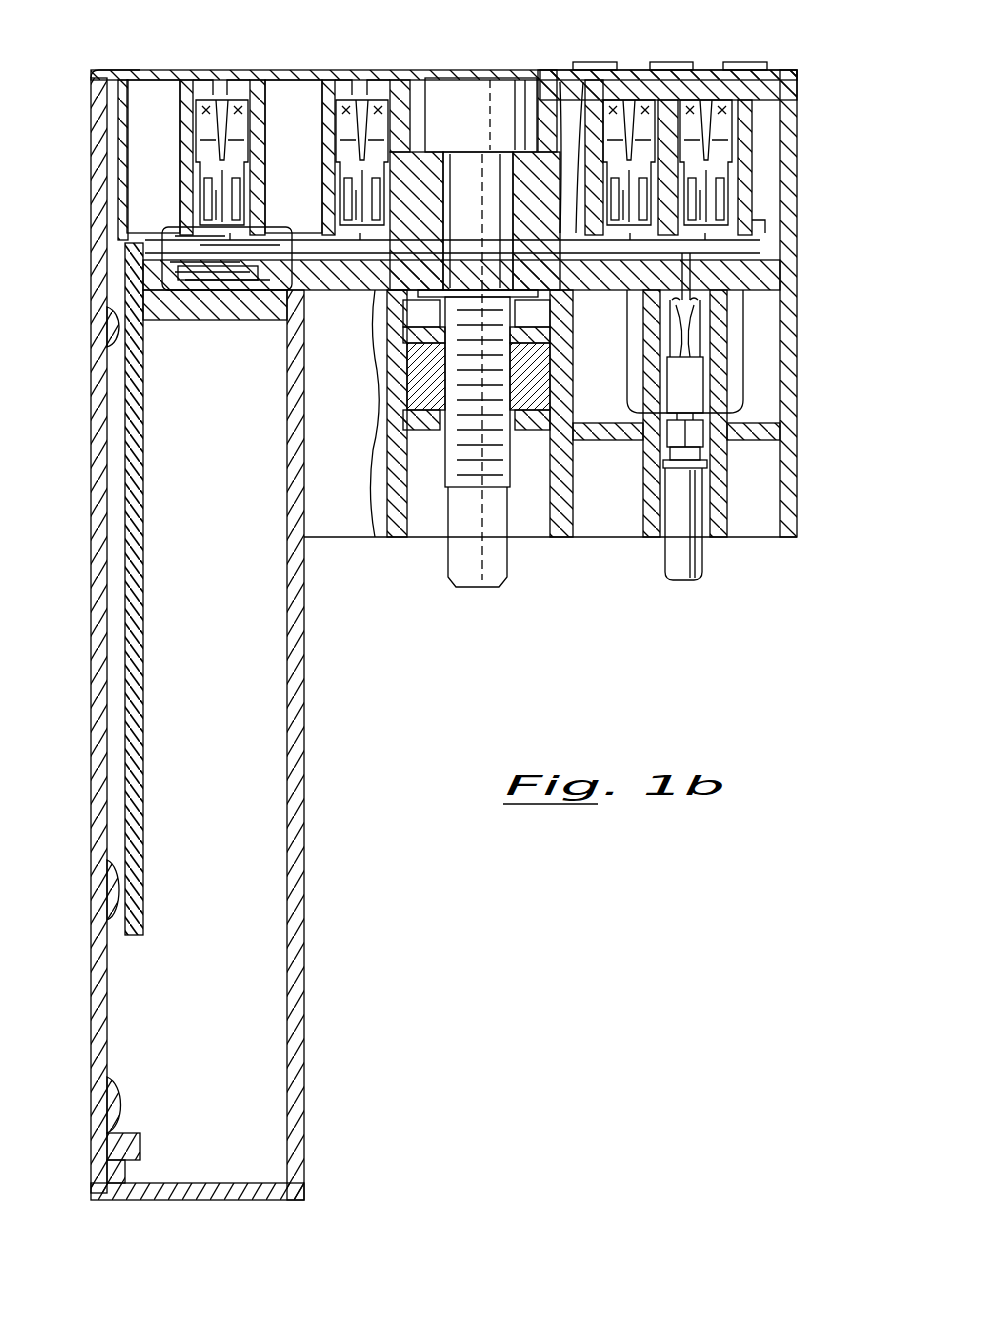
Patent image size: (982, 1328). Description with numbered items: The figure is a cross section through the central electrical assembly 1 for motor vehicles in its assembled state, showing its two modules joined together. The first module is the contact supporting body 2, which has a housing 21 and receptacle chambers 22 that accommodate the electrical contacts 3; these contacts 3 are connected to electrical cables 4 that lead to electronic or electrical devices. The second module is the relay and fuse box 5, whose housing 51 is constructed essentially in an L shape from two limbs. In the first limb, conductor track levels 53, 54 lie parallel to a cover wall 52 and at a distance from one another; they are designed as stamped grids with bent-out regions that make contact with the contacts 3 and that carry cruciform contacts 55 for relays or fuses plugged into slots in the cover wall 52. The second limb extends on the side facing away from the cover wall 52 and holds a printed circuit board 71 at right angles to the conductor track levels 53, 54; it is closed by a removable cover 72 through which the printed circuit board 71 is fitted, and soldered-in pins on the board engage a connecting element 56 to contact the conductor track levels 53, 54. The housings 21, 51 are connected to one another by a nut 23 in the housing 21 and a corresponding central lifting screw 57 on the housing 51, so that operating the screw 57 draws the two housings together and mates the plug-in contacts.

The central electrical assembly 1 is at (81, 343).
The contact supporting body 2 is at (763, 407).
The housing 21 is at (757, 440).
The receptacle chambers 22 is at (707, 362).
The nut 23 is at (423, 390).
The electrical contacts 3 is at (693, 337).
The electrical cables 4 is at (685, 553).
The relay and fuse box 5 is at (295, 95).
The housing 51 is at (795, 125).
The cover wall 52 is at (142, 77).
The conductor track level 53 is at (680, 255).
The conductor track level 54 is at (575, 85).
The cruciform contacts 55 is at (230, 108).
The connecting element 56 is at (197, 277).
The central lifting screw 57 is at (466, 85).
The printed circuit board 71 is at (127, 775).
The cover 72 is at (97, 1025).